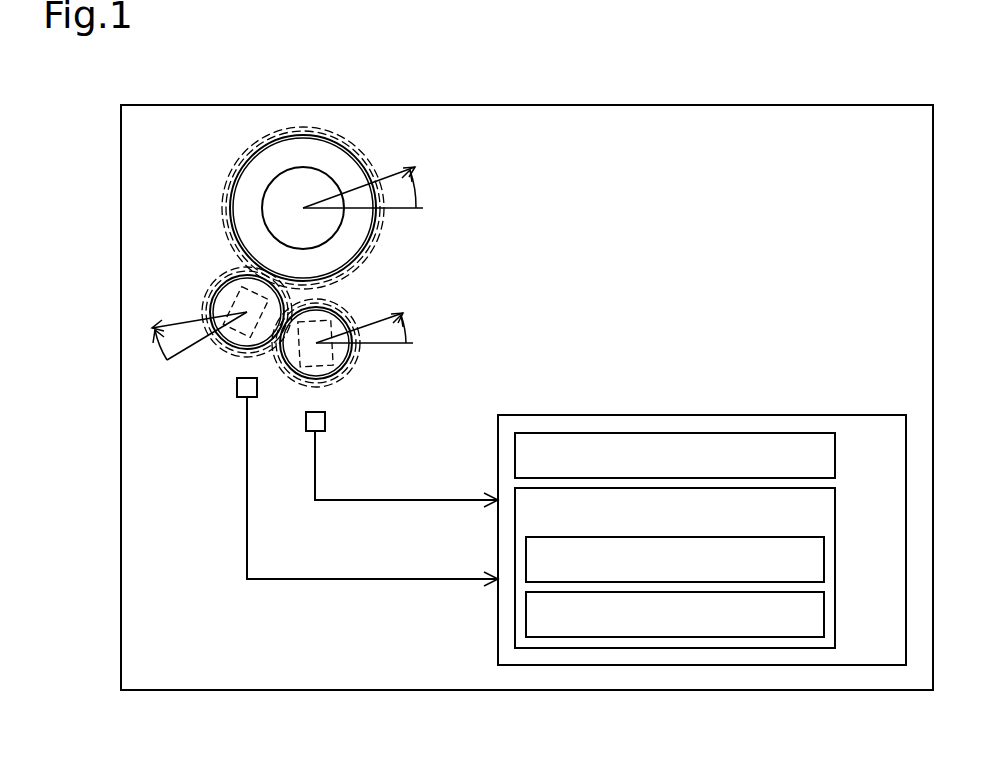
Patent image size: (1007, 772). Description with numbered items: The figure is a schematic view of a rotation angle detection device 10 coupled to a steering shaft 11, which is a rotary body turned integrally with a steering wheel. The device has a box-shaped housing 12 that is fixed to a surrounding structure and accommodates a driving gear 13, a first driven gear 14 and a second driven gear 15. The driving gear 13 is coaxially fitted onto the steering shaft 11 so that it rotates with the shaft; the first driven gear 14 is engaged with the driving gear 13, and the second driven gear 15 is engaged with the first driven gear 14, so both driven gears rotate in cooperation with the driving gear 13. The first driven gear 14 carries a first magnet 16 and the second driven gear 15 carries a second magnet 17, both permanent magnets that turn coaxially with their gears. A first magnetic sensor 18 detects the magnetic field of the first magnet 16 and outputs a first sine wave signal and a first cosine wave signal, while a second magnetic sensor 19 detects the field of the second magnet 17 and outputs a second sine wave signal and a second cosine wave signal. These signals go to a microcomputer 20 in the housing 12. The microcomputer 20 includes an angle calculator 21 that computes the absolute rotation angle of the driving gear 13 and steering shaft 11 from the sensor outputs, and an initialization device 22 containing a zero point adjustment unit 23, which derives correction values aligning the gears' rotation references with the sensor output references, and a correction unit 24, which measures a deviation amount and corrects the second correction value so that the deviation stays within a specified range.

The rotation angle detection device 10 is at (100, 119).
The steering shaft 11 is at (313, 166).
The housing 12 is at (840, 105).
The driving gear 13 is at (246, 146).
The first driven gear 14 is at (208, 297).
The second driven gear 15 is at (330, 300).
The first magnet 16 is at (214, 278).
The second magnet 17 is at (357, 369).
The first magnetic sensor 18 is at (237, 389).
The second magnetic sensor 19 is at (326, 421).
The microcomputer 20 is at (815, 415).
The angle calculator 21 is at (836, 455).
The initialization device 22 is at (836, 512).
The zero point adjustment unit 23 is at (824, 560).
The correction unit 24 is at (824, 617).